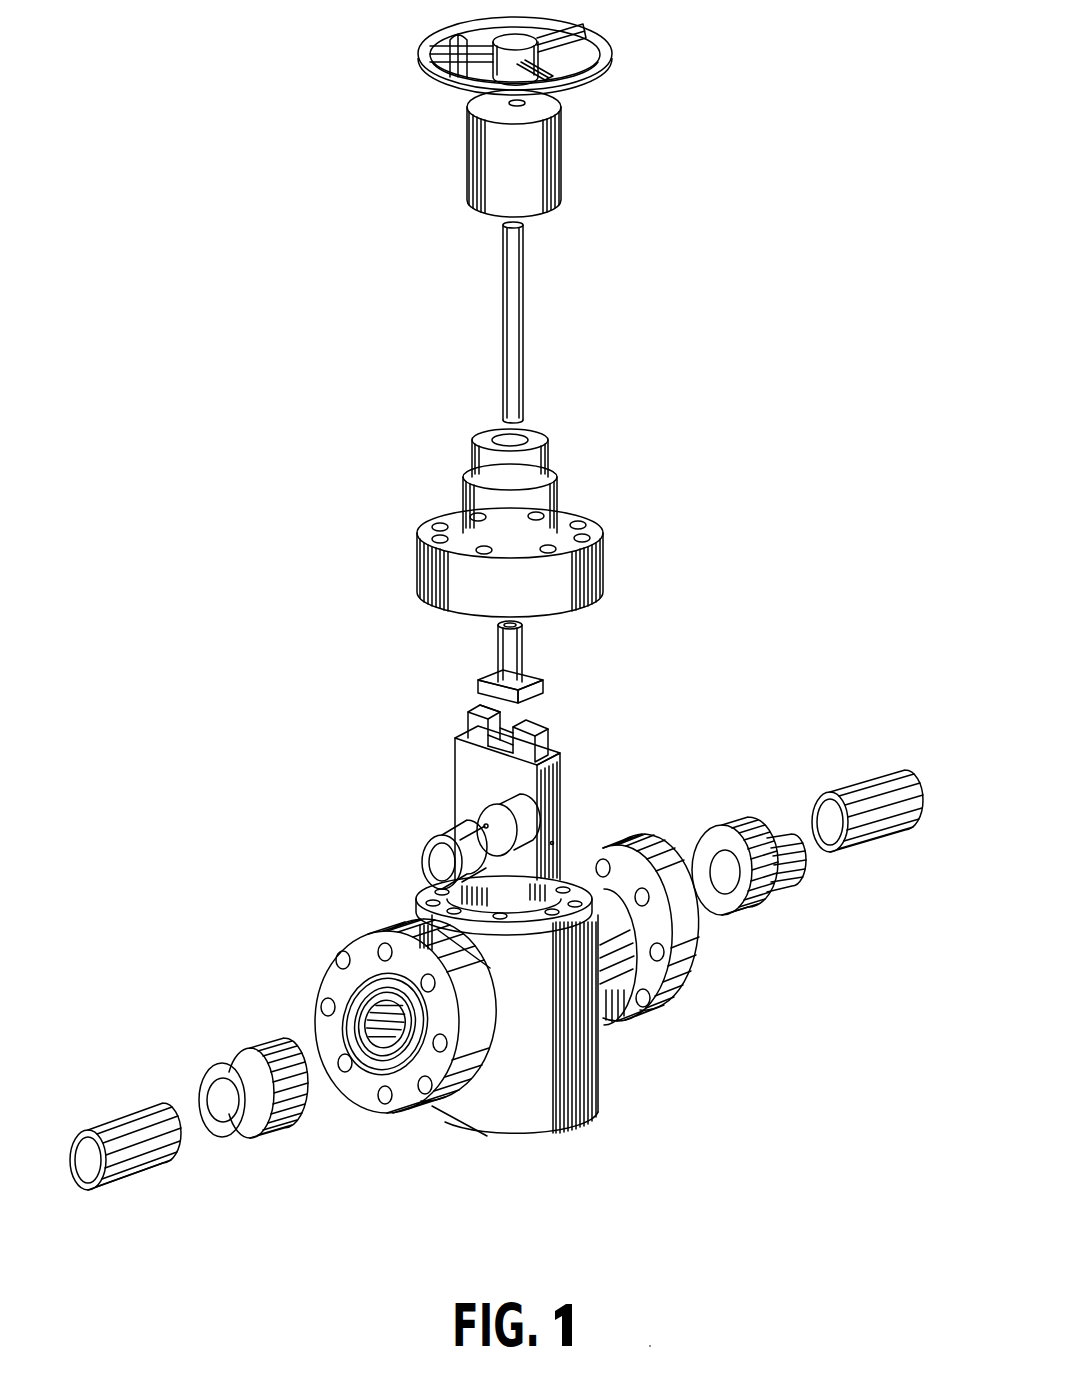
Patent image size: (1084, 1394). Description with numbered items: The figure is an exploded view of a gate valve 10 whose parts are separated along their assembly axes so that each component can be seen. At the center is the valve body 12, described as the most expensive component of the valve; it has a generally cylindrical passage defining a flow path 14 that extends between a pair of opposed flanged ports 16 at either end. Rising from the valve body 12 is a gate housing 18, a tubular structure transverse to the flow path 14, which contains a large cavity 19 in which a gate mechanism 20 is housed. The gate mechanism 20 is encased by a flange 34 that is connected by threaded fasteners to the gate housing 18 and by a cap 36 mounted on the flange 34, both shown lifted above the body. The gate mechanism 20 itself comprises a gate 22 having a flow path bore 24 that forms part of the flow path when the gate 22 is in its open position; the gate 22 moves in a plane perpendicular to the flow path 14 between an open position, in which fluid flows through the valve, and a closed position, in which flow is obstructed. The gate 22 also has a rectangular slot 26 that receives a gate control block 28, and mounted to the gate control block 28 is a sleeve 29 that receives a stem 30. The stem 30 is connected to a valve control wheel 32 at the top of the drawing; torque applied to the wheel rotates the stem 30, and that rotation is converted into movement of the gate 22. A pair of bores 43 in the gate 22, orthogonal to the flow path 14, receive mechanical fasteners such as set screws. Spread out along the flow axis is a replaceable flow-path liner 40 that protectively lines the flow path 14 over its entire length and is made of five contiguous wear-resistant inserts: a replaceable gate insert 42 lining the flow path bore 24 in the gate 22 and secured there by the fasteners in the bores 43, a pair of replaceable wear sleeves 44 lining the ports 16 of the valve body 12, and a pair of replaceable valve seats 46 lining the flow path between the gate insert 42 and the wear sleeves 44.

The gate valve 10 is at (303, 413).
The valve body 12 is at (547, 1056).
The flow path 14 is at (390, 1026).
The flanged ports 16 is at (495, 1017).
The gate housing 18 is at (520, 1007).
The cavity 19 is at (518, 888).
The gate mechanism 20 is at (652, 738).
The gate 22 is at (462, 748).
The flow path bore 24 is at (515, 820).
The rectangular slot 26 is at (472, 728).
The gate control block 28 is at (543, 672).
The sleeve 29 is at (523, 640).
The stem 30 is at (515, 328).
The valve control wheel 32 is at (612, 56).
The flange 34 is at (605, 558).
The cap 36 is at (561, 160).
The replaceable flow-path liner 40 is at (415, 818).
The replaceable gate insert 42 is at (422, 862).
The bores 43 is at (552, 843).
The replaceable wear sleeves 44 is at (862, 772).
The replaceable valve seats 46 is at (755, 825).